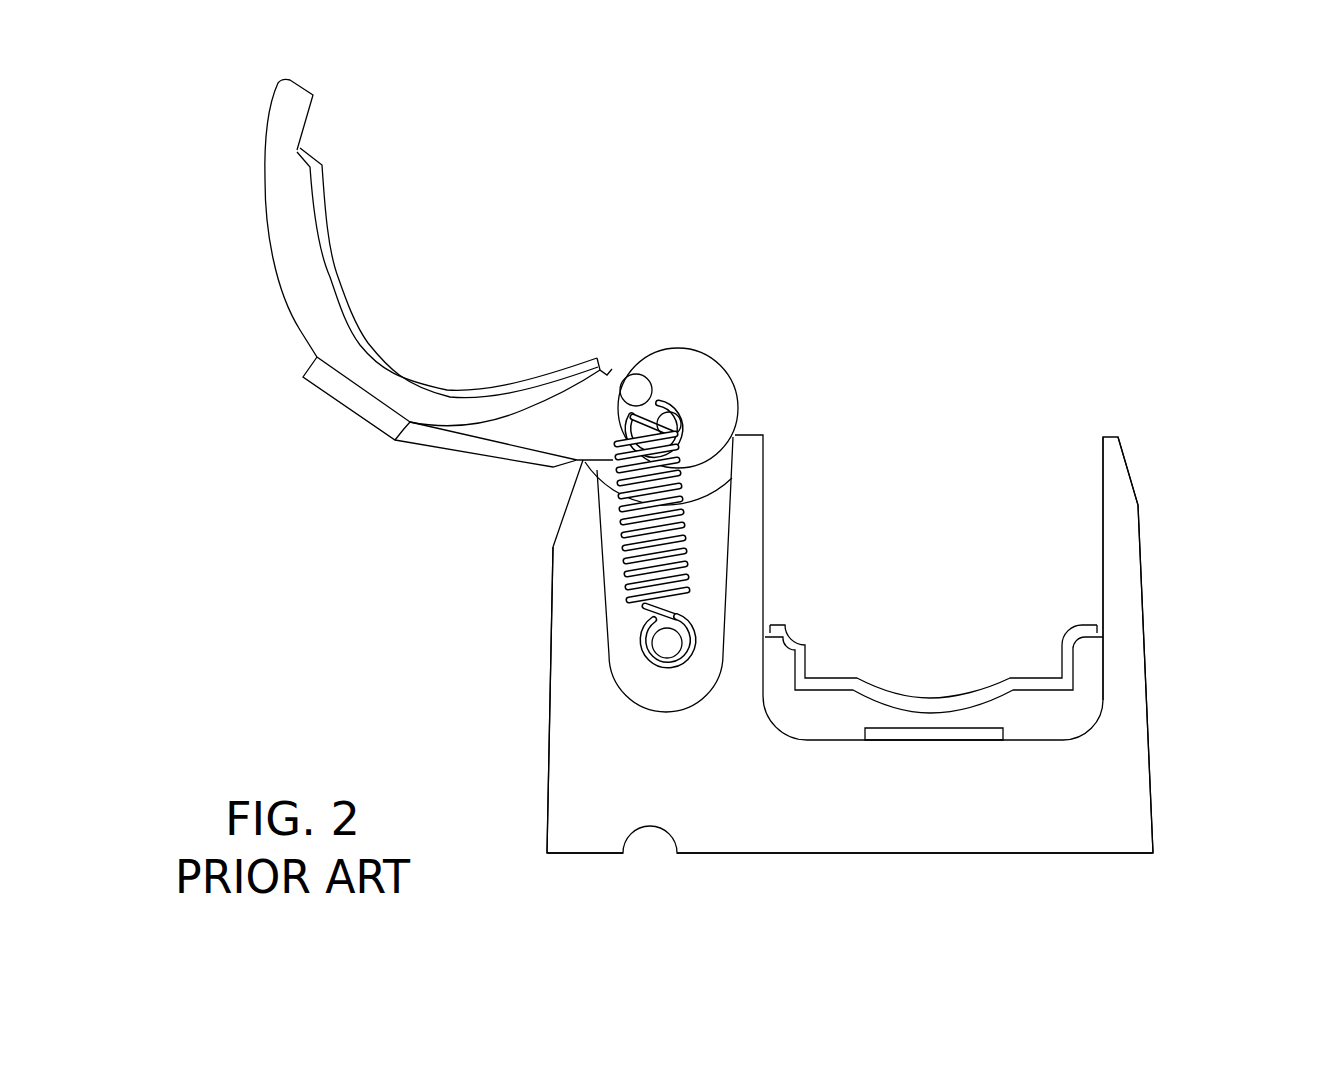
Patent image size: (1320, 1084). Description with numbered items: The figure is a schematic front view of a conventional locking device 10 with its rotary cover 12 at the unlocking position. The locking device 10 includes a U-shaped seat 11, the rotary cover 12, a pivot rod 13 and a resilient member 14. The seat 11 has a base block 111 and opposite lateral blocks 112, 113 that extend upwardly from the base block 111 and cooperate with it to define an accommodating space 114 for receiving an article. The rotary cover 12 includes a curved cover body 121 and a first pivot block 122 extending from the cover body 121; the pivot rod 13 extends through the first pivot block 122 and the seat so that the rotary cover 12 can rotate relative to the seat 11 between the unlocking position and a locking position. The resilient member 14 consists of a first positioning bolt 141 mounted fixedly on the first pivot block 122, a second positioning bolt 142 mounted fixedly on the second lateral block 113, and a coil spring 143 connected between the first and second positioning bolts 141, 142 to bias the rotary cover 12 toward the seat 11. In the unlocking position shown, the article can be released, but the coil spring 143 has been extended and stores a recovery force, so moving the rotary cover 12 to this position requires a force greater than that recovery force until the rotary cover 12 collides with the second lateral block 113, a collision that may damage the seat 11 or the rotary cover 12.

The locking device 10 is at (1135, 400).
The seat 11 is at (1160, 683).
The base block 111 is at (940, 838).
The first lateral block 112 is at (1133, 528).
The second lateral block 113 is at (565, 725).
The accommodating space 114 is at (990, 445).
The rotary cover 12 is at (255, 191).
The cover body 121 is at (272, 230).
The first pivot block 122 is at (728, 395).
The pivot rod 13 is at (670, 410).
The resilient member 14 is at (618, 558).
The first positioning bolt 141 is at (633, 380).
The second positioning bolt 142 is at (660, 657).
The coil spring 143 is at (630, 578).